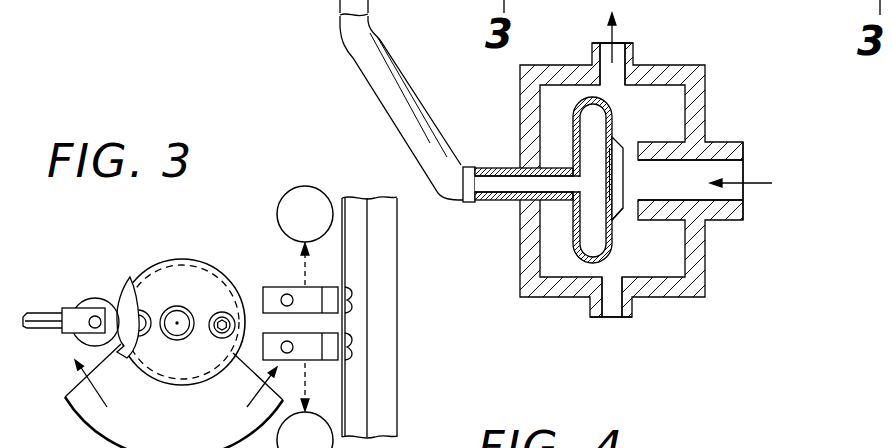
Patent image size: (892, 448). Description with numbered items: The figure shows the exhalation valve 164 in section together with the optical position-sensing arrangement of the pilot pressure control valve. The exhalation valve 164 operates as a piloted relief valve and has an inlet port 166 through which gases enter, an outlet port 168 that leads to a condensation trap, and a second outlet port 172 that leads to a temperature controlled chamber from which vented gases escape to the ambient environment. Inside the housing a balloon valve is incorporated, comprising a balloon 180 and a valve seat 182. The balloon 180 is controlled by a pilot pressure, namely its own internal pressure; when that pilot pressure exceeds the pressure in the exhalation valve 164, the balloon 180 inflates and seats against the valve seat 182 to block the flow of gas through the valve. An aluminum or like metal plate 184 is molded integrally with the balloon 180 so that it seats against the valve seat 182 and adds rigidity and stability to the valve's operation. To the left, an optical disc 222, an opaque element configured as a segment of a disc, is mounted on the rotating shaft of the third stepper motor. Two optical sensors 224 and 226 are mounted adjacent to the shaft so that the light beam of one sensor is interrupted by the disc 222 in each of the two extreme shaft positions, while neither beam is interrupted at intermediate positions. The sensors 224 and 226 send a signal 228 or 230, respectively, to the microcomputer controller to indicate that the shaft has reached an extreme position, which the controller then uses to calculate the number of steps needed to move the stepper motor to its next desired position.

The exhalation valve 164 is at (707, 101).
The inlet port 166 is at (730, 193).
The outlet port 168 is at (610, 310).
The second outlet port 172 is at (617, 50).
The balloon 180 is at (580, 97).
The valve seat 182 is at (634, 148).
The metal plate 184 is at (612, 219).
The optical disc 222 is at (90, 415).
The optical sensor 224 is at (284, 299).
The optical sensor 226 is at (283, 348).
The signal 228 is at (305, 235).
The signal 230 is at (305, 405).